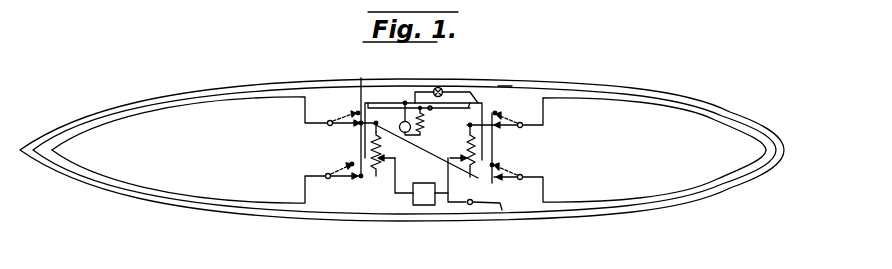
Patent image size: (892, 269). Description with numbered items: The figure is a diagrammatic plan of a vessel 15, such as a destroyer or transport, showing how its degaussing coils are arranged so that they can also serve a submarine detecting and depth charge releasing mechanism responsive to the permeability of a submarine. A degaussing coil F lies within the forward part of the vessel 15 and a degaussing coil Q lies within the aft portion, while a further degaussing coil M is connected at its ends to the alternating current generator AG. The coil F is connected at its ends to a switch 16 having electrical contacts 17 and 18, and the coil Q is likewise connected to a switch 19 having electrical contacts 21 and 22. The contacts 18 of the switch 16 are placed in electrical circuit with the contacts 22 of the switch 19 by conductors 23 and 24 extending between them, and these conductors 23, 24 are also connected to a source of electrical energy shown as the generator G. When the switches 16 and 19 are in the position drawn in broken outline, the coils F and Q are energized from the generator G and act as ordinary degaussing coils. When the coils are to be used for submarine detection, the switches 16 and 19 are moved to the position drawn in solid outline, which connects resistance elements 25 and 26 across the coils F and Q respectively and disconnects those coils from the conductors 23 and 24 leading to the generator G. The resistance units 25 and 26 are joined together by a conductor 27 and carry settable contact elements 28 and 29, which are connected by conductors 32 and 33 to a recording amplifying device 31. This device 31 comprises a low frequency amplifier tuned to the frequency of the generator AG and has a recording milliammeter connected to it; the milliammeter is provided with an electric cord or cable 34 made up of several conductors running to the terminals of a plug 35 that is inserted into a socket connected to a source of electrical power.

The degaussing coil F is at (160, 110).
The vessel 15 is at (672, 88).
The degaussing coil Q is at (660, 106).
The degaussing coil M is at (506, 86).
The switch 16 is at (324, 129).
The electrical contact 17 is at (356, 186).
The electrical contact 18 is at (356, 112).
The switch 19 is at (520, 131).
The electrical contact 21 is at (509, 179).
The electrical contact 22 is at (496, 104).
The conductor 23 is at (478, 95).
The conductor 24 is at (465, 106).
The resistance element 25 is at (383, 182).
The resistance element 26 is at (470, 207).
The conductor 27 is at (436, 152).
The settable contact element 28 is at (421, 131).
The settable contact element 29 is at (466, 130).
The recording amplifying device 31 is at (410, 207).
The conductor 32 is at (385, 206).
The conductor 33 is at (446, 212).
The electric cord or cable 34 is at (456, 210).
The plug 35 is at (502, 214).
The generator G is at (413, 96).
The alternating current generator AG is at (443, 88).